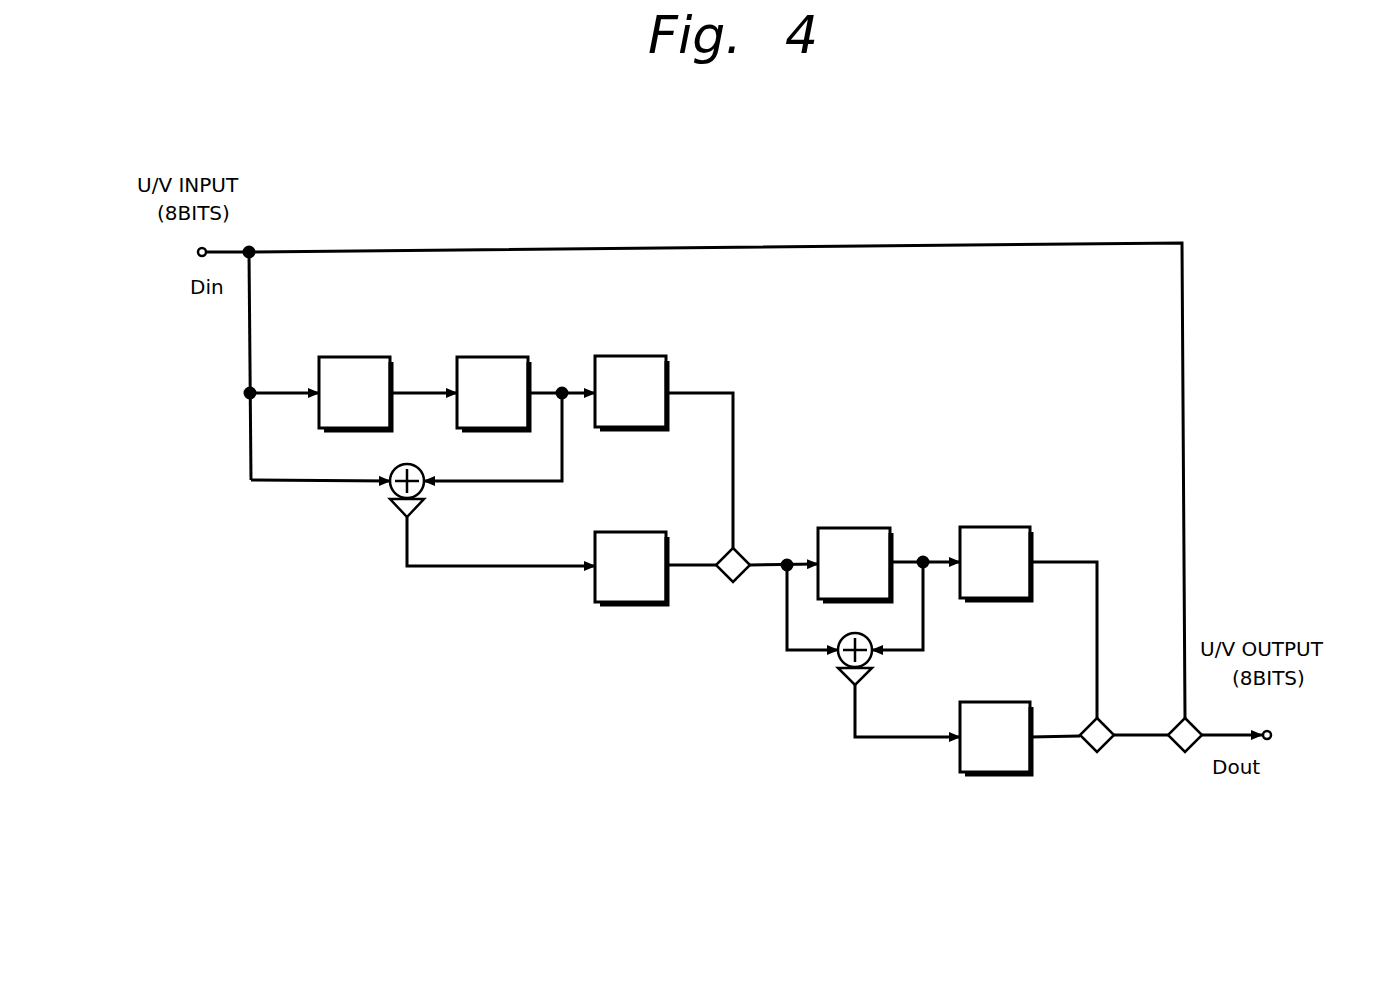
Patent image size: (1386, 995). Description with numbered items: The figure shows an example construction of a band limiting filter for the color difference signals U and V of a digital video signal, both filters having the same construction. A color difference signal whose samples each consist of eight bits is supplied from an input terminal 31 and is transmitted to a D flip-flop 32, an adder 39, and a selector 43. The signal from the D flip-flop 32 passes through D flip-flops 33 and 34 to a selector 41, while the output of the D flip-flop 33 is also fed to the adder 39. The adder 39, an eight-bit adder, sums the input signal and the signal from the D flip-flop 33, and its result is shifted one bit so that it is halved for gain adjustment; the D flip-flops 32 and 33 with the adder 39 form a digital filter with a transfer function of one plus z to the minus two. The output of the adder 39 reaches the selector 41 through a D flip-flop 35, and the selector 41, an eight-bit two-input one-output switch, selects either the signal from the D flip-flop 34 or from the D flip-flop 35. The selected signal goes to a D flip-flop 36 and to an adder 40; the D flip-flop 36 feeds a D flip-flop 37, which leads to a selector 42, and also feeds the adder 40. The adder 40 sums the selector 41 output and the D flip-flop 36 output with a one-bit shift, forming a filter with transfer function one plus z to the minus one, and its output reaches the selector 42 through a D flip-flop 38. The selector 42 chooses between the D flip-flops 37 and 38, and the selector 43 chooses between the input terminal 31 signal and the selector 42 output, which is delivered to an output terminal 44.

The input terminal 31 is at (196, 253).
The D flip-flop 32 is at (352, 357).
The D flip-flop 33 is at (491, 357).
The D flip-flop 34 is at (628, 356).
The D flip-flop 35 is at (629, 532).
The D flip-flop 36 is at (854, 528).
The D flip-flop 37 is at (991, 527).
The D flip-flop 38 is at (991, 702).
The adder 39 is at (390, 498).
The adder 40 is at (840, 667).
The selector 41 is at (733, 583).
The selector 42 is at (1097, 753).
The selector 43 is at (1185, 753).
The output terminal 44 is at (1273, 735).